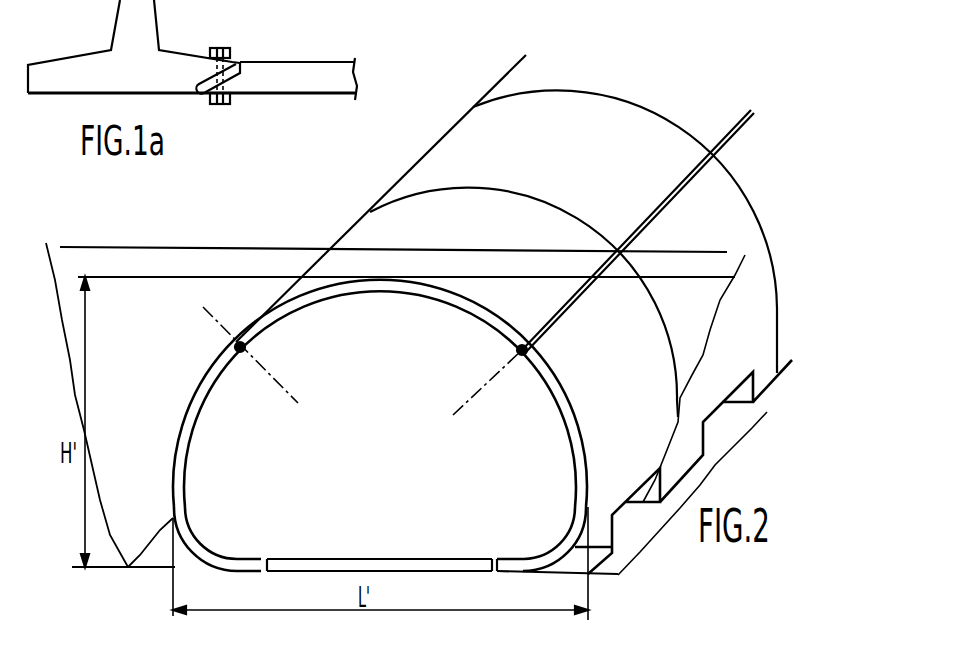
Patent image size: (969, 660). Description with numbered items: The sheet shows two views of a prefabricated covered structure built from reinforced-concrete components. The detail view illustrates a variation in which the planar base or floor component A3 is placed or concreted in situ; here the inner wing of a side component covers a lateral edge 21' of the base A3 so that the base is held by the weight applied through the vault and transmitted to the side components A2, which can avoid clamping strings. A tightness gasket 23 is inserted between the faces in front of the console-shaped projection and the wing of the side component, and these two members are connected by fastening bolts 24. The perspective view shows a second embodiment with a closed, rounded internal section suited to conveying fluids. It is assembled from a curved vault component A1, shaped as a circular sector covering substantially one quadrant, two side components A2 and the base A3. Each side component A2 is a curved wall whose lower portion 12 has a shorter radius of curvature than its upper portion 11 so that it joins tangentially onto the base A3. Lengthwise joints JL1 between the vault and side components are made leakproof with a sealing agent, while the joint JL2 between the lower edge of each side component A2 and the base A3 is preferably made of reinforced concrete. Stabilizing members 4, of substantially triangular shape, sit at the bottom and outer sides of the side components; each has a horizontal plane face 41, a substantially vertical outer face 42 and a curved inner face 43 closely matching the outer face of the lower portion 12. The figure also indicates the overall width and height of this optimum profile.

In FIG. 1A, the fastening bolts 24 is at (230, 50).
In FIG. 1A, the tightness gasket 23 is at (201, 96).
In FIG. 1A, the lateral edges of the planar base 21' is at (255, 97).
In FIG. 1A, the base or floor component A3 is at (312, 77).
In FIG. 2, the base or floor component A3 is at (370, 563).
In FIG. 2, the lower portion of the side component 12 is at (297, 246).
In FIG. 2, the upper portion of the side component 11 is at (560, 393).
In FIG. 2, the lengthwise joints JL1 is at (518, 352).
In FIG. 2, the joint between side component and base JL2 is at (496, 560).
In FIG. 2, the curved vault component A1 is at (402, 295).
In FIG. 2, the side components A2 is at (567, 440).
In FIG. 2, the curved inner face of the stabilizing member 43 is at (540, 558).
In FIG. 2, the horizontal plane face of the stabilizing member 41 is at (545, 577).
In FIG. 2, the stabilizing members 4 is at (577, 564).
In FIG. 2, the substantially vertical outer face of the stabilizing member 42 is at (612, 545).